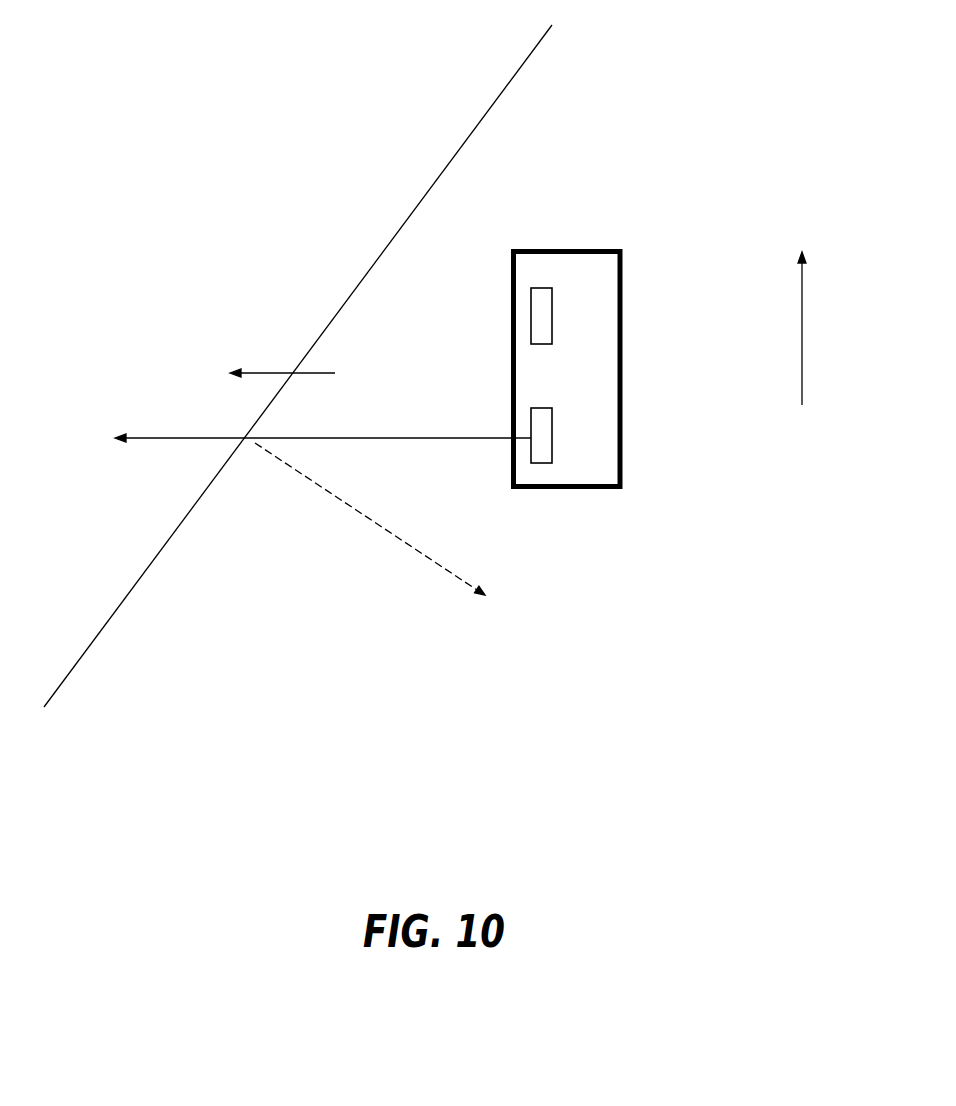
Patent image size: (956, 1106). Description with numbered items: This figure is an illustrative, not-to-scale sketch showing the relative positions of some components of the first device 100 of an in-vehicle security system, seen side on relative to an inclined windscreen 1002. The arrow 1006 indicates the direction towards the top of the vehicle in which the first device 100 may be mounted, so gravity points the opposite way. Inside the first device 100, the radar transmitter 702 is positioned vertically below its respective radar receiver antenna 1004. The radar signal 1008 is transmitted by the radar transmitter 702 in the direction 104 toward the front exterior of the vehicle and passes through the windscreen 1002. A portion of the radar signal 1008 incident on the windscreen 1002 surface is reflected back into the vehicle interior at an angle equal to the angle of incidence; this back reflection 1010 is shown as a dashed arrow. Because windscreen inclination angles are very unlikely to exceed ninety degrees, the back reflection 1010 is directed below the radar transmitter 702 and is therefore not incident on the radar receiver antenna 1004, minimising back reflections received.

The windscreen 1002 is at (483, 118).
The first device 100 is at (619, 222).
The radar receiver antenna 1004 is at (532, 317).
The radar transmitter 702 is at (547, 465).
The direction 104 is at (257, 369).
The radar signal 1008 is at (301, 425).
The back reflection 1010 is at (400, 540).
The arrow 1006 is at (801, 302).